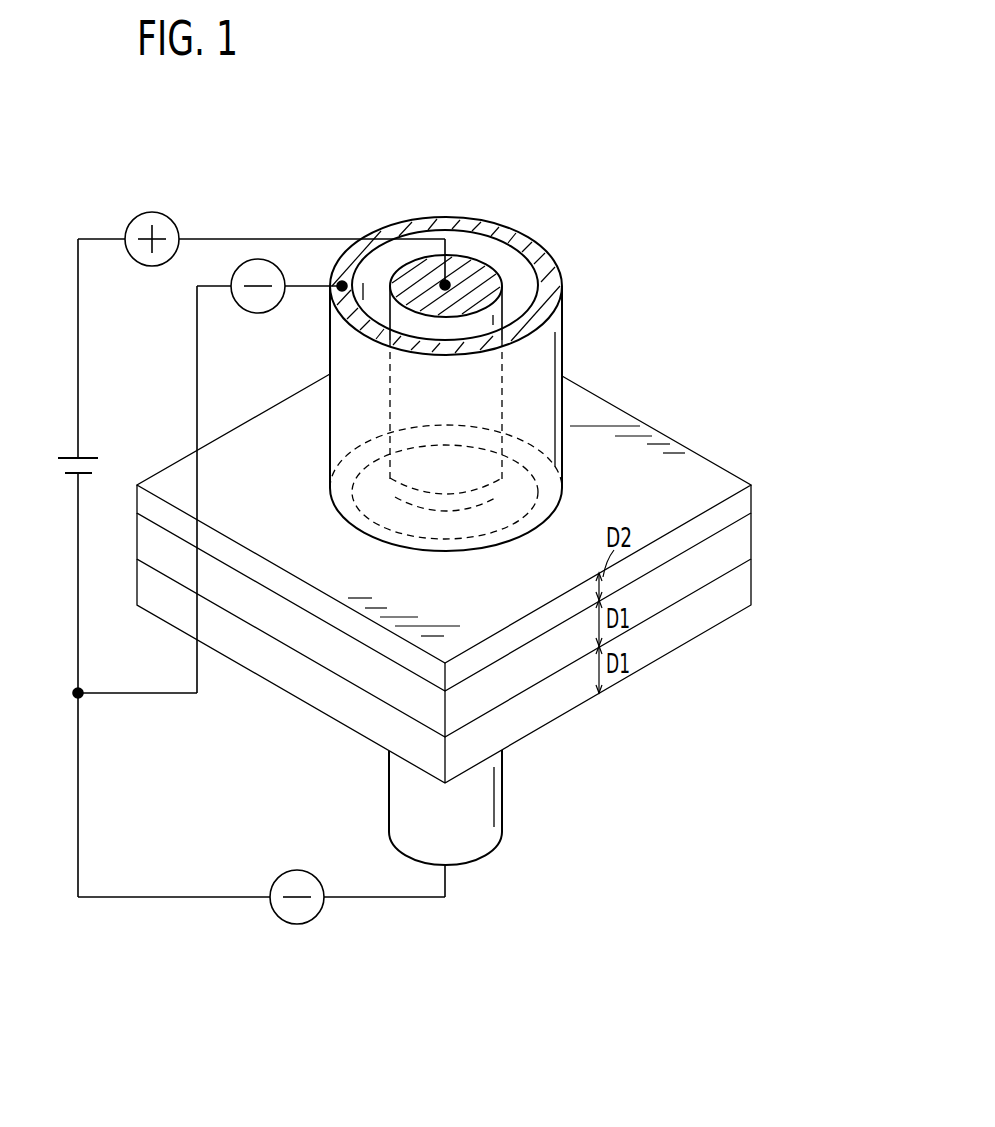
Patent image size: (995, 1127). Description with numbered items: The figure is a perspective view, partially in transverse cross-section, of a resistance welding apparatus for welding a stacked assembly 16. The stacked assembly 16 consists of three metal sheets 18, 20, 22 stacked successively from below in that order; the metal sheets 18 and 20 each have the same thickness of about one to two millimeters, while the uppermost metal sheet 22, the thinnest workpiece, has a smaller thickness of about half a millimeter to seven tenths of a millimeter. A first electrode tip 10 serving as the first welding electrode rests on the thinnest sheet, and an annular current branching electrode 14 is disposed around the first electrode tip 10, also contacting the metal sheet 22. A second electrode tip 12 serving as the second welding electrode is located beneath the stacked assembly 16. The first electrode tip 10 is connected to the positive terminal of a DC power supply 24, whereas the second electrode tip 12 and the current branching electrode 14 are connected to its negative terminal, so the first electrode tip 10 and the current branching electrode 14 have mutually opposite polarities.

The first electrode tip 10 is at (470, 266).
The second electrode tip 12 is at (487, 808).
The current branching electrode 14 is at (403, 229).
The stacked assembly 16 is at (499, 578).
The metal sheet 18 is at (472, 671).
The metal sheet 20 is at (748, 542).
The metal sheet 22 is at (748, 499).
The DC power supply 24 is at (88, 455).